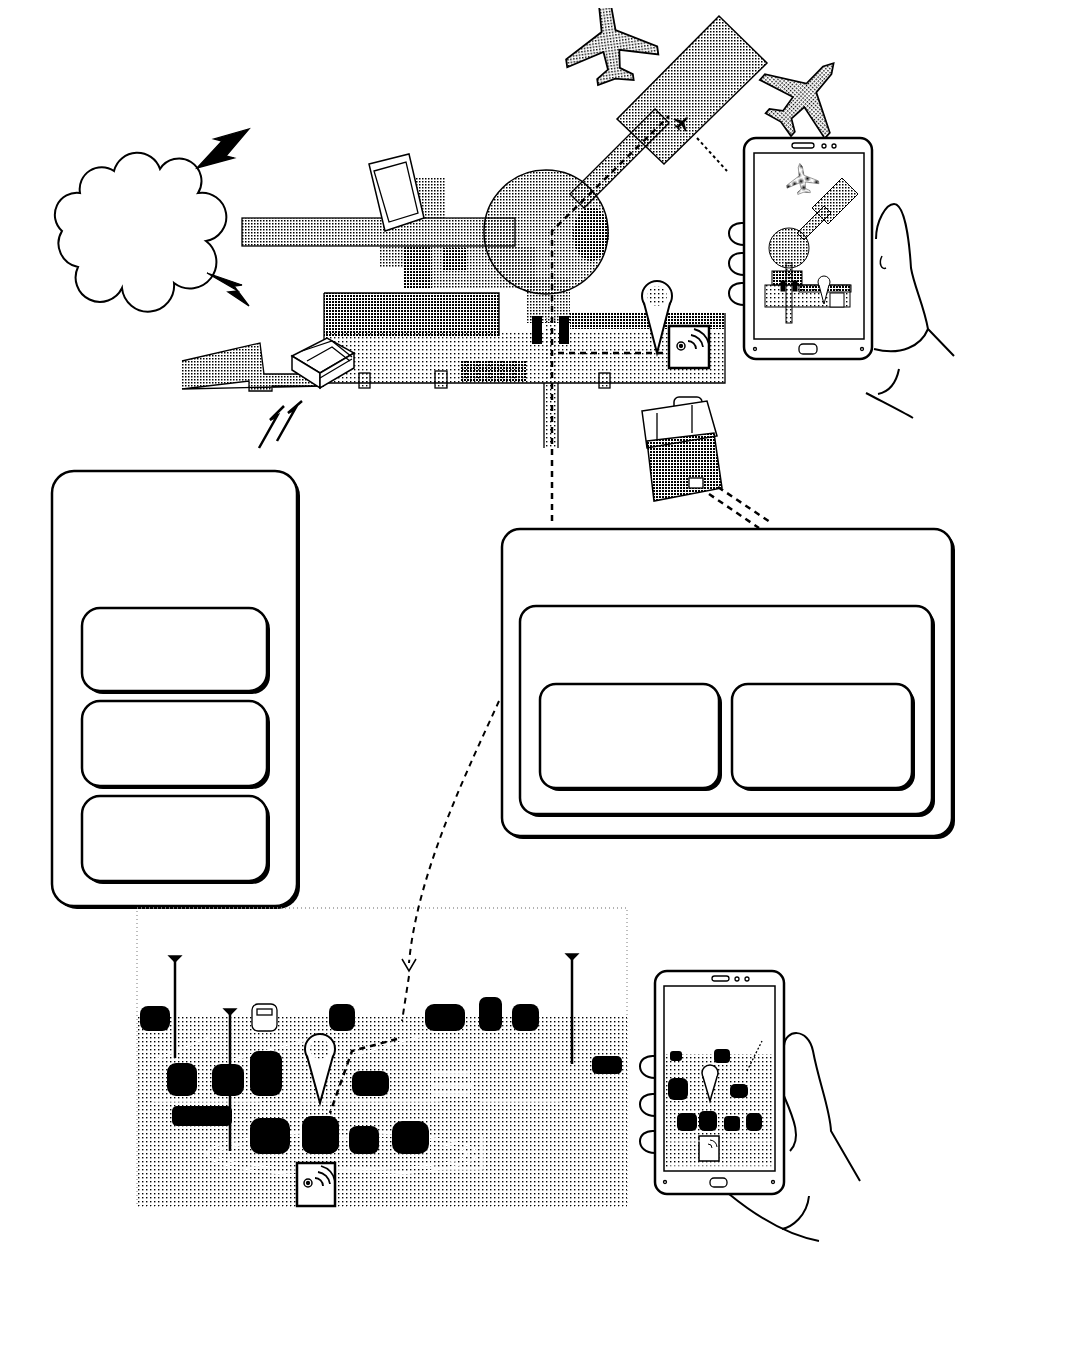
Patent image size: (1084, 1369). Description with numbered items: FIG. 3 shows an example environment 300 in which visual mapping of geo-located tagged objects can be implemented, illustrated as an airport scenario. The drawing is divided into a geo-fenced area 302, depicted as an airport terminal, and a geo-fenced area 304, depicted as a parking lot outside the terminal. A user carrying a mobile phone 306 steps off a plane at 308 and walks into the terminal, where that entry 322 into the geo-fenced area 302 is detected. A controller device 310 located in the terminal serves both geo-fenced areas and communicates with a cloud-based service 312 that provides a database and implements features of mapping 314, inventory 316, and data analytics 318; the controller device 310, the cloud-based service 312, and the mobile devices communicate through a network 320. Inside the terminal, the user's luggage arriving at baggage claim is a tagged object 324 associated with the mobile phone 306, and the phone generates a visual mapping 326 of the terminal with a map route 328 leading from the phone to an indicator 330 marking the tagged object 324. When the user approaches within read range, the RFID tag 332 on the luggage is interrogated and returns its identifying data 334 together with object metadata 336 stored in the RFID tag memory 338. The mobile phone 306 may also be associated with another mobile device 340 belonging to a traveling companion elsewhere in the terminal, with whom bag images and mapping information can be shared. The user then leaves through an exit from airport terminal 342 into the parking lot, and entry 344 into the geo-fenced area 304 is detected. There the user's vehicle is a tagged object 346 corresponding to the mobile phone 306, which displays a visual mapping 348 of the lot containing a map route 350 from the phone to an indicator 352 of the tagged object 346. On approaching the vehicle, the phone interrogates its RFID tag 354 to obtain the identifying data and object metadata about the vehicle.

The example environment 300 is at (305, 60).
The geo-fenced area 302 is at (524, 264).
The geo-fenced area 304 is at (382, 1115).
The mobile phone 306 is at (797, 674).
The plane 308 is at (810, 419).
The controller device 310 is at (323, 377).
The cloud-based service 312 is at (176, 690).
The mapping 314 is at (176, 651).
The inventory 316 is at (176, 745).
The data analytics 318 is at (176, 840).
The network 320 is at (178, 288).
The entry 322 is at (709, 264).
The tagged object 324 is at (708, 462).
The visual mapping 326 is at (848, 172).
The map route 328 is at (568, 200).
The indicator 330 is at (674, 311).
The RFID tag 332 is at (728, 684).
The identifying data 334 is at (631, 737).
The object metadata 336 is at (823, 737).
The RFID tag memory 338 is at (727, 711).
The mobile device 340 is at (376, 192).
The exit from airport terminal 342 is at (432, 988).
The entry 344 is at (450, 861).
The tagged object 346 is at (330, 1145).
The visual mapping 348 is at (753, 1002).
The map route 350 is at (392, 1037).
The indicator 352 is at (310, 1033).
The RFID tag 354 is at (316, 1202).